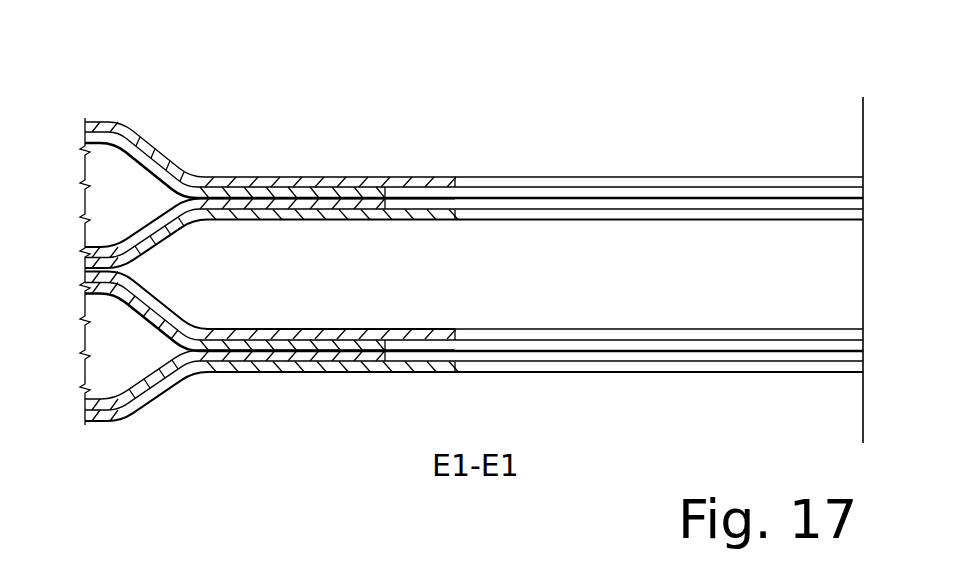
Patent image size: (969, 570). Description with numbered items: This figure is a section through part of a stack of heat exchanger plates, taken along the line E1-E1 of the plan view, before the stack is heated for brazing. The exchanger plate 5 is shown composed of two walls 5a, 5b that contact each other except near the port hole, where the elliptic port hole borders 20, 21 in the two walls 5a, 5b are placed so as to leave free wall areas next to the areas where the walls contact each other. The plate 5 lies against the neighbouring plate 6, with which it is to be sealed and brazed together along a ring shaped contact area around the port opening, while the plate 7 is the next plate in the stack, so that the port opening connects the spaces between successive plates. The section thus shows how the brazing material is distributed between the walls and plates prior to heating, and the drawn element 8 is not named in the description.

The plate 5 is at (172, 140).
The wall 5a is at (241, 167).
The wall 5b is at (306, 182).
The plate 6 is at (178, 248).
The plate 7 is at (152, 323).
The lower wall 8 is at (181, 390).
The port hole border 20 is at (458, 176).
The port hole border 21 is at (387, 198).